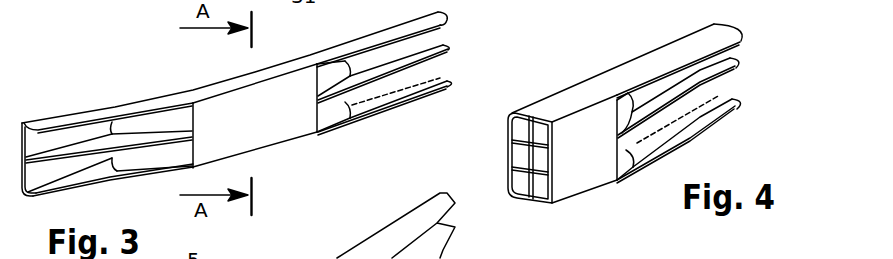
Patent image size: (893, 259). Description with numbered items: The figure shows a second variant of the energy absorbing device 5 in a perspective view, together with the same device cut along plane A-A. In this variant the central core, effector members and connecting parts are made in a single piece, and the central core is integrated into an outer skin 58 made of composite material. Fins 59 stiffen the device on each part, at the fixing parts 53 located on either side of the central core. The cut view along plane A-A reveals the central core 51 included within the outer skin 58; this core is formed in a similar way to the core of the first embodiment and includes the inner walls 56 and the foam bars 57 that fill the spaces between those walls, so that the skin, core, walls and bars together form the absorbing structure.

In FIG. 3, the absorbing device 5 is at (150, 91).
In FIG. 4, the central core 51 is at (501, 149).
In FIG. 3, the fixing parts 53 is at (442, 38).
In FIG. 4, the inner walls 56 is at (543, 182).
In FIG. 4, the foam bars 57 is at (521, 180).
In FIG. 3, the outer skin 58 is at (283, 123).
In FIG. 4, the outer skin 58 is at (512, 112).
In FIG. 3, the fins 59 is at (440, 64).
In FIG. 4, the fins 59 is at (733, 63).